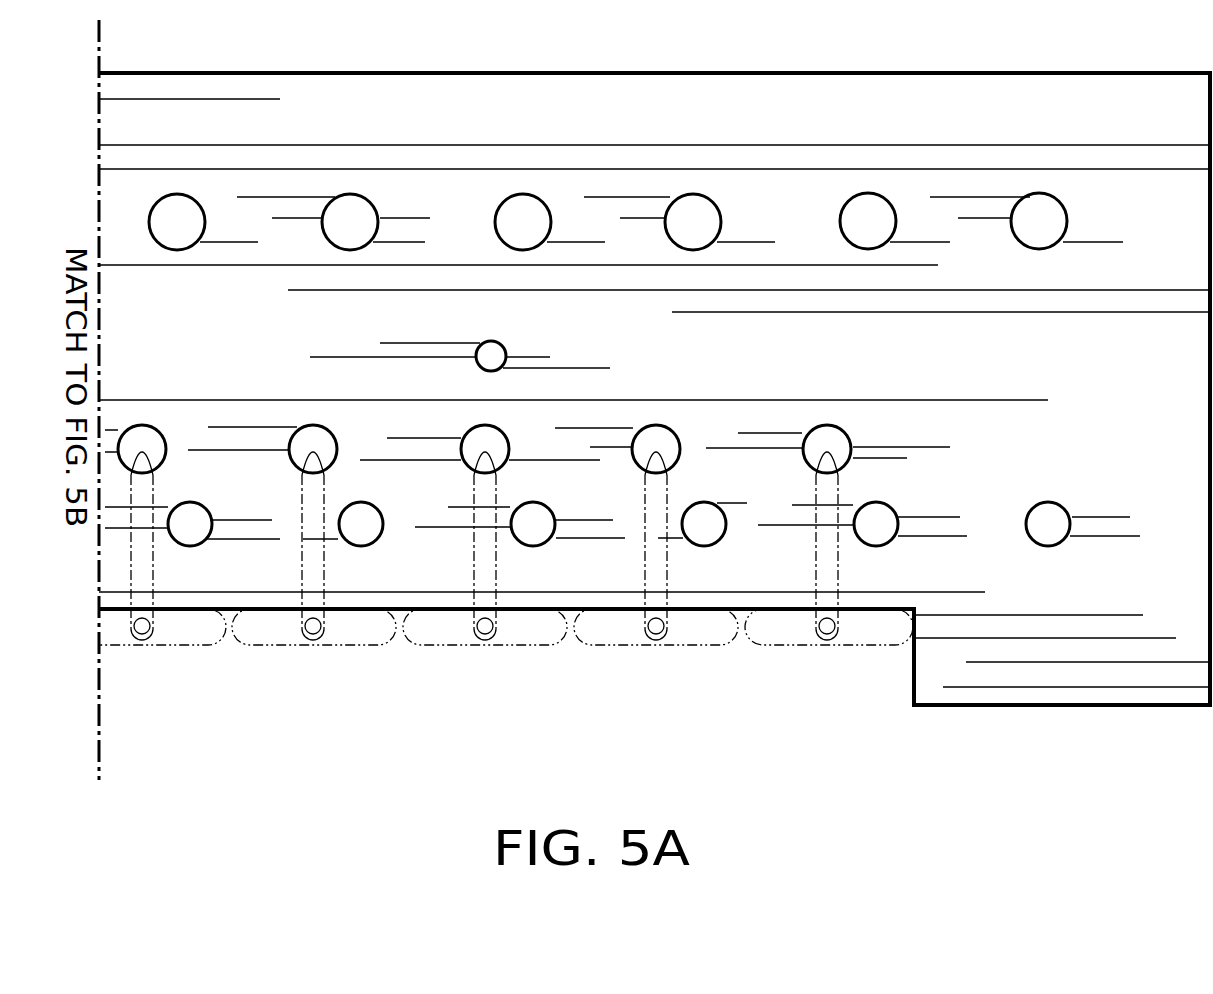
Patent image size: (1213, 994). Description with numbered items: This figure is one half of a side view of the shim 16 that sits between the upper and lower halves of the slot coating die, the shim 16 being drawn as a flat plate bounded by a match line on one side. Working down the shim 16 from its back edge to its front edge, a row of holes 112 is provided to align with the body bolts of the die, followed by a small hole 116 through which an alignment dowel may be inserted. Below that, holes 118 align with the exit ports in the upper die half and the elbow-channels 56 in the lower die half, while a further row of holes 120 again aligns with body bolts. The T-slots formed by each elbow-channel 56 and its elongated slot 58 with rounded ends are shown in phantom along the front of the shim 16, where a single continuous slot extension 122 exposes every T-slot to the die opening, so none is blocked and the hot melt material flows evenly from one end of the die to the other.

The shim 16 is at (1073, 720).
The holes 112 is at (357, 212).
The holes 116 is at (489, 354).
The holes 118 is at (657, 438).
The holes 120 is at (878, 516).
The slot extension 122 is at (395, 673).
The elbow-channel 56 is at (823, 552).
The elongated slot 58 is at (877, 637).